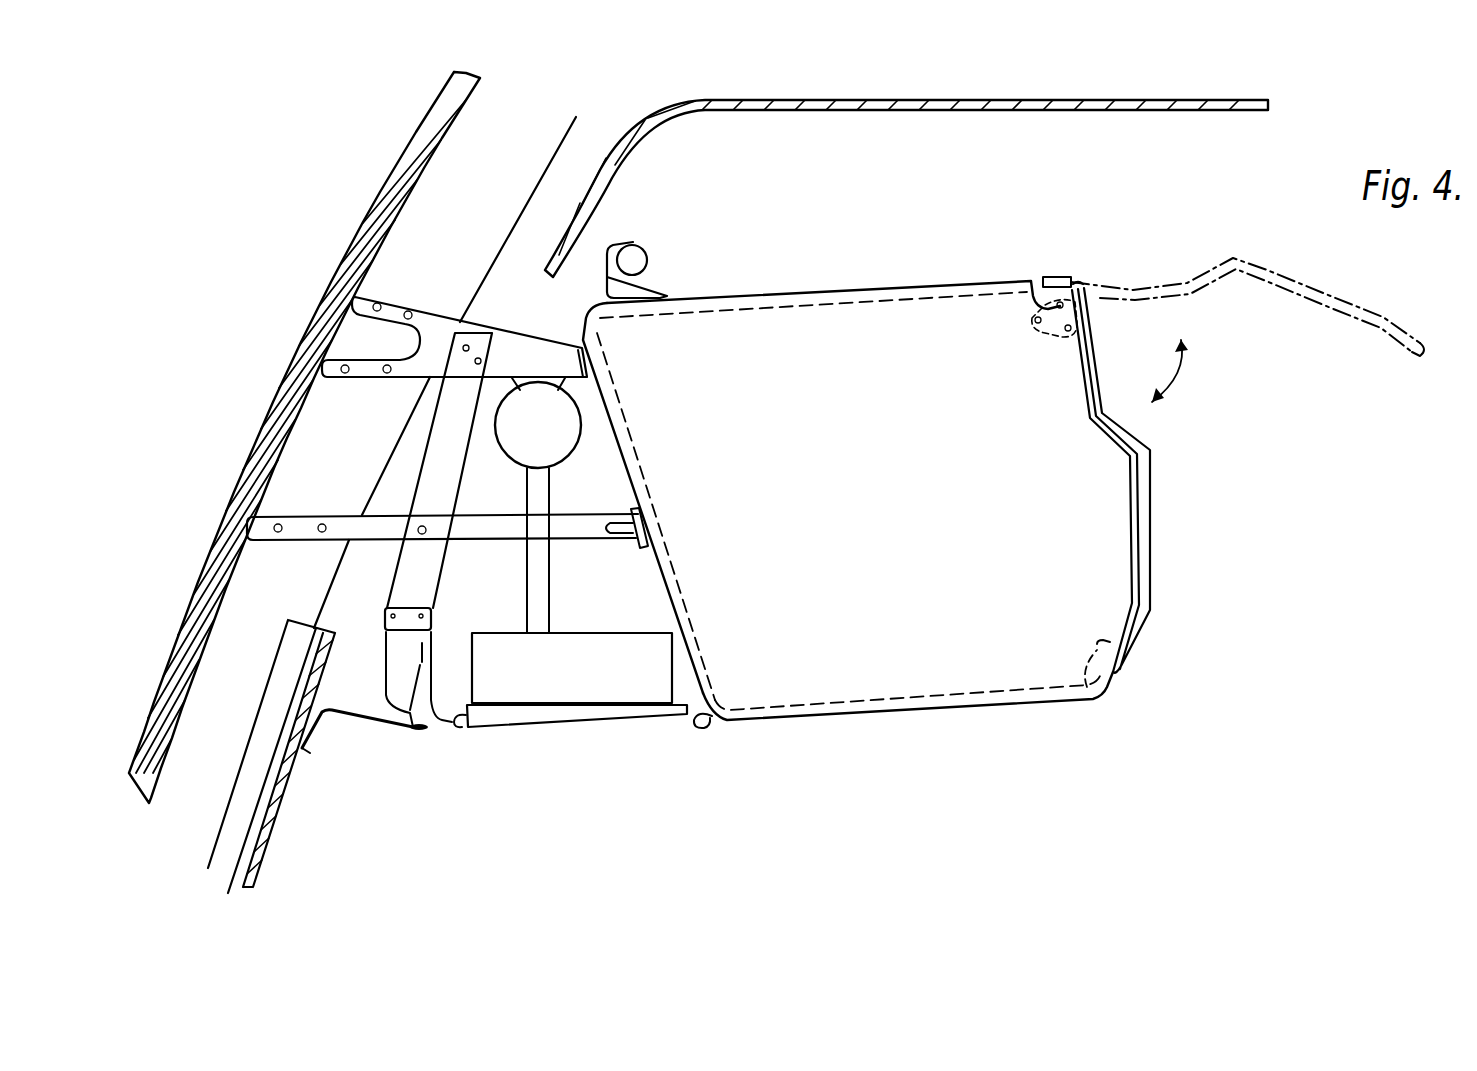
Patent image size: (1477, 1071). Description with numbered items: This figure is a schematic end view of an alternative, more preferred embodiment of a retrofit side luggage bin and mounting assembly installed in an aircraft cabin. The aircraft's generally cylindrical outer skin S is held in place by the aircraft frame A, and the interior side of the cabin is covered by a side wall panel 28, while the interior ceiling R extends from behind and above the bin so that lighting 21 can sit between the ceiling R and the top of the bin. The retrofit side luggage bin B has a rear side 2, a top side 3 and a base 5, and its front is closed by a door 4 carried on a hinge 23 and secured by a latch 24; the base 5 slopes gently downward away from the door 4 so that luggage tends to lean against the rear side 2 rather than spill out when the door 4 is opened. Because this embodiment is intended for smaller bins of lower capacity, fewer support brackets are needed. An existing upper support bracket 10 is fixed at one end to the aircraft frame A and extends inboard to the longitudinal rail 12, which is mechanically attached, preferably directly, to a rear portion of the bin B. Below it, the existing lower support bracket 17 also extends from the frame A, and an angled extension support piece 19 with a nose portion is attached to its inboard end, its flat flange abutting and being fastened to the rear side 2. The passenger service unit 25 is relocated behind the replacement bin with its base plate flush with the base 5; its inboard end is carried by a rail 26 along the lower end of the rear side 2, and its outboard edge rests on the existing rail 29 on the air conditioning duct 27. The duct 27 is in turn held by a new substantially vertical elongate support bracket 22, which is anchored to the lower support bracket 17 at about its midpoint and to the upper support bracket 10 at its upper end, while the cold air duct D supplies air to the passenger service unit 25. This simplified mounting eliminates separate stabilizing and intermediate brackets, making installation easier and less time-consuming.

The outer skin S is at (393, 197).
The aircraft frame A is at (310, 460).
The interior ceiling R is at (907, 103).
The retrofit side luggage bin B is at (1065, 247).
The cold air duct D is at (538, 505).
The rear side 2 is at (680, 600).
The top side 3 is at (833, 293).
The door 4 is at (1328, 297).
The base 5 is at (912, 712).
The upper support bracket 10 is at (422, 308).
The rail 12 is at (580, 352).
The lower support bracket 17 is at (568, 533).
The angled extension support piece 19 is at (633, 542).
The lighting 21 is at (653, 250).
The vertical elongate support bracket 22 is at (440, 557).
The hinge 23 is at (1047, 333).
The latch 24 is at (1080, 656).
The passenger service unit 25 is at (570, 690).
The rail 26 is at (714, 727).
The air conditioning duct 27 is at (372, 700).
The side wall panel 28 is at (287, 777).
The rail 29 is at (458, 713).